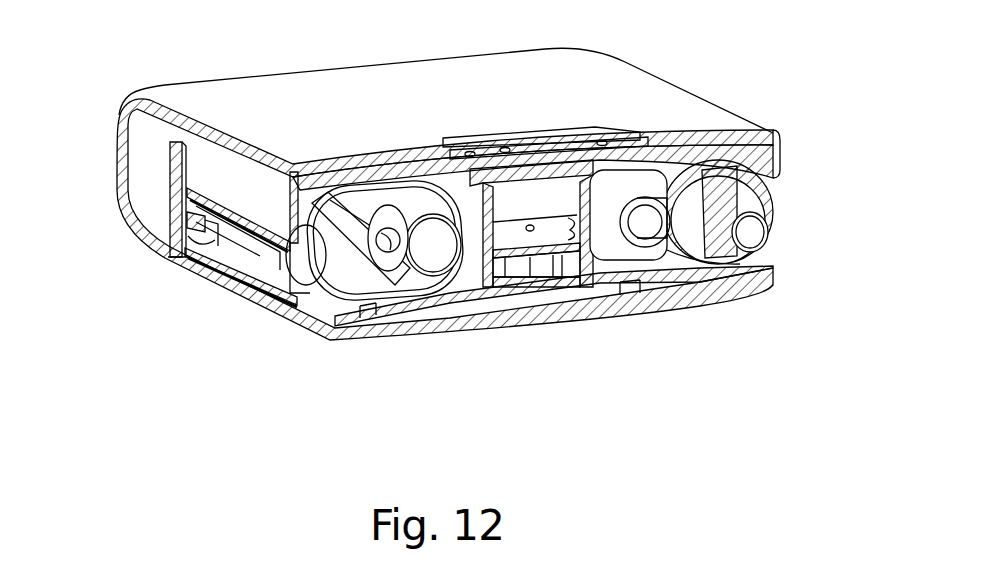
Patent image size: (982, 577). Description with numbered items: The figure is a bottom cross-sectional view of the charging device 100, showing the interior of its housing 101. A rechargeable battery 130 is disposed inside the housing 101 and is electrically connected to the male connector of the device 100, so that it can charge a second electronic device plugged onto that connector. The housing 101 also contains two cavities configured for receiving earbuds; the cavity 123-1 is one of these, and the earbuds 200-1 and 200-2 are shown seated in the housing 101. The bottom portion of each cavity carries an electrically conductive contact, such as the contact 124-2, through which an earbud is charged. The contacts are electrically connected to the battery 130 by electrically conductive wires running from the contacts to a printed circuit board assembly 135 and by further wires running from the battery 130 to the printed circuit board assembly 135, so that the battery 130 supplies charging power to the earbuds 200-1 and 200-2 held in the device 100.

The device 100 is at (82, 111).
The housing 101 is at (686, 86).
The rechargeable battery 130 is at (223, 170).
The electrically conductive contact 124-2 is at (187, 232).
The cavity 123-1 is at (273, 268).
The earbud 200-1 is at (350, 297).
The earbud 200-2 is at (773, 222).
The printed circuit board assembly 135 is at (533, 268).